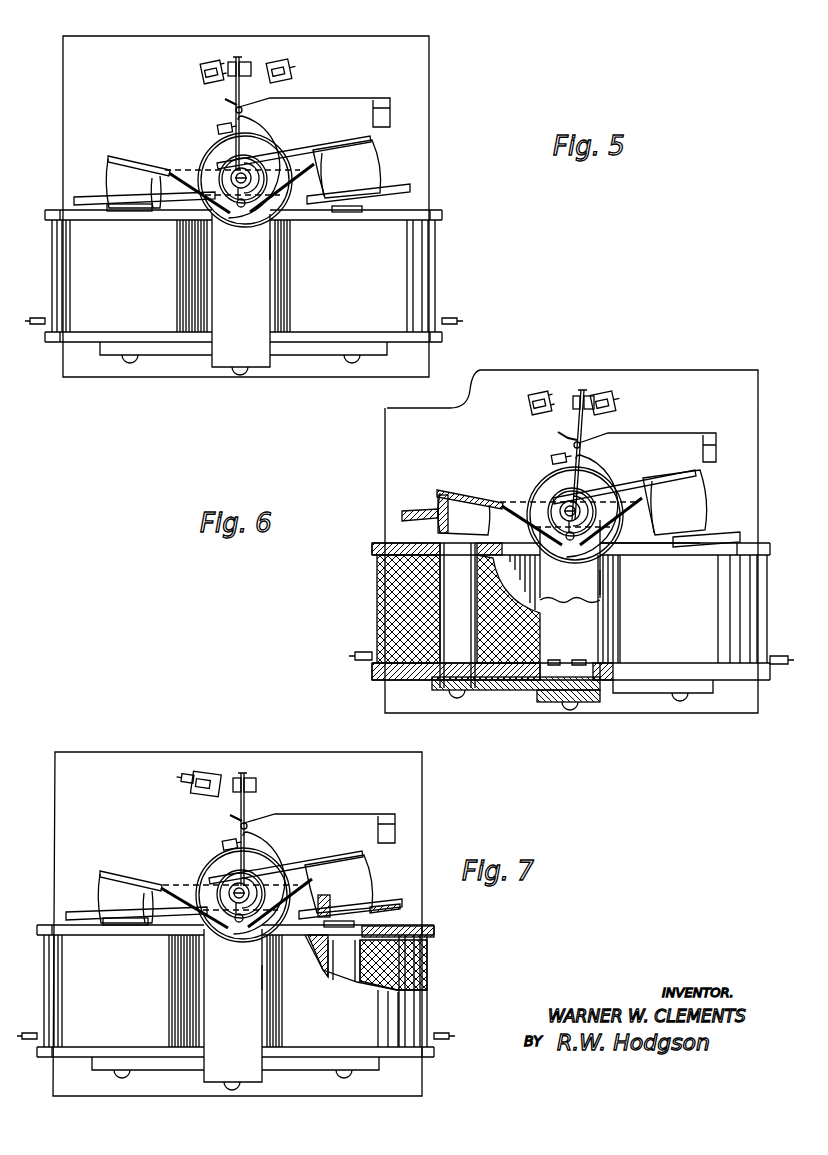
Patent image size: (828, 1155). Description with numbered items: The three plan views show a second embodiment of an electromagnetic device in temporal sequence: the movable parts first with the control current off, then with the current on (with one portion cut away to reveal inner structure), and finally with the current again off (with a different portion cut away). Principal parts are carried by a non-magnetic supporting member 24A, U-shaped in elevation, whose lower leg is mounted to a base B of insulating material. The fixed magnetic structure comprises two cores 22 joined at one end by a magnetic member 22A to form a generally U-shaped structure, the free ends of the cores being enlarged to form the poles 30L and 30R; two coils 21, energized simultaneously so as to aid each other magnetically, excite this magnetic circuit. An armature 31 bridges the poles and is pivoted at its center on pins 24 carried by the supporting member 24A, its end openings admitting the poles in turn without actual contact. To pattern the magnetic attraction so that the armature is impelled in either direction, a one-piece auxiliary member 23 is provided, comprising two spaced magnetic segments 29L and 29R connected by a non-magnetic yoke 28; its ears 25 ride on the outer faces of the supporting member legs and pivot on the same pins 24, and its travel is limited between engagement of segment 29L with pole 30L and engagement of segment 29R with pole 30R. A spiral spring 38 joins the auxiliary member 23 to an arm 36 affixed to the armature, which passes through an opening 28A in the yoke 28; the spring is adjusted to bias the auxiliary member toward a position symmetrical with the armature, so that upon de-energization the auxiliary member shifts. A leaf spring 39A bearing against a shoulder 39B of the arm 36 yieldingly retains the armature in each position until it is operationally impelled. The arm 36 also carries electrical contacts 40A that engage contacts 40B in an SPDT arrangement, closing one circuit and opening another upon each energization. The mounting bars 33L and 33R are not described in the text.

In FIG. 5, the base B is at (420, 66).
In FIG. 6, the base B is at (737, 418).
In FIG. 7, the base B is at (420, 793).
In FIG. 5, the coils 21 is at (134, 305).
In FIG. 6, the coils 21 is at (385, 627).
In FIG. 7, the coils 21 is at (268, 991).
In FIG. 6, the cores 22 is at (467, 604).
In FIG. 7, the cores 22 is at (344, 961).
In FIG. 5, the magnetic member 22A is at (175, 356).
In FIG. 6, the magnetic member 22A is at (503, 692).
In FIG. 7, the magnetic member 22A is at (235, 1084).
In FIG. 5, the auxiliary member 23 is at (190, 136).
In FIG. 6, the auxiliary member 23 is at (520, 469).
In FIG. 7, the auxiliary member 23 is at (205, 876).
In FIG. 5, the pivot pins 24 is at (245, 210).
In FIG. 6, the pivot pins 24 is at (590, 555).
In FIG. 7, the pivot pins 24 is at (233, 1003).
In FIG. 5, the supporting member 24A is at (271, 250).
In FIG. 6, the supporting member 24A is at (601, 596).
In FIG. 7, the supporting member 24A is at (289, 984).
In FIG. 5, the ears 25 is at (306, 148).
In FIG. 6, the ears 25 is at (628, 495).
In FIG. 7, the ears 25 is at (286, 866).
In FIG. 5, the yoke 28 is at (180, 152).
In FIG. 6, the yoke 28 is at (522, 498).
In FIG. 7, the yoke 28 is at (164, 882).
In FIG. 5, the opening 28A is at (217, 126).
In FIG. 6, the opening 28A is at (556, 470).
In FIG. 7, the opening 28A is at (207, 898).
In FIG. 5, the left segment 29L is at (120, 181).
In FIG. 6, the left segment 29L is at (455, 492).
In FIG. 7, the left segment 29L is at (107, 890).
In FIG. 5, the right segment 29R is at (360, 170).
In FIG. 6, the right segment 29R is at (740, 490).
In FIG. 7, the right segment 29R is at (356, 886).
In FIG. 5, the left pole 30L is at (125, 215).
In FIG. 6, the left pole 30L is at (378, 545).
In FIG. 7, the left pole 30L is at (109, 944).
In FIG. 5, the right pole 30R is at (355, 215).
In FIG. 6, the right pole 30R is at (675, 545).
In FIG. 7, the right pole 30R is at (312, 946).
In FIG. 5, the armature 31 is at (310, 203).
In FIG. 6, the armature 31 is at (645, 537).
In FIG. 7, the armature 31 is at (215, 921).
In FIG. 5, the left mounting bar 33L is at (76, 198).
In FIG. 6, the left mounting bar 33L is at (400, 525).
In FIG. 7, the left mounting bar 33L is at (116, 901).
In FIG. 5, the right mounting bar 33R is at (413, 188).
In FIG. 6, the right mounting bar 33R is at (742, 538).
In FIG. 7, the right mounting bar 33R is at (386, 912).
In FIG. 5, the arm 36 is at (240, 88).
In FIG. 6, the arm 36 is at (584, 428).
In FIG. 7, the arm 36 is at (280, 829).
In FIG. 5, the spiral spring 38 is at (268, 133).
In FIG. 6, the spiral spring 38 is at (602, 472).
In FIG. 7, the spiral spring 38 is at (282, 883).
In FIG. 5, the leaf spring 39A is at (225, 103).
In FIG. 6, the leaf spring 39A is at (558, 433).
In FIG. 7, the leaf spring 39A is at (199, 809).
In FIG. 5, the shoulder 39B is at (250, 105).
In FIG. 6, the shoulder 39B is at (583, 447).
In FIG. 7, the shoulder 39B is at (318, 828).
In FIG. 5, the electrical contacts 40A is at (236, 57).
In FIG. 6, the electrical contacts 40A is at (580, 390).
In FIG. 7, the electrical contacts 40A is at (271, 751).
In FIG. 5, the contacts 40B is at (213, 83).
In FIG. 6, the contacts 40B is at (545, 392).
In FIG. 7, the contacts 40B is at (176, 782).